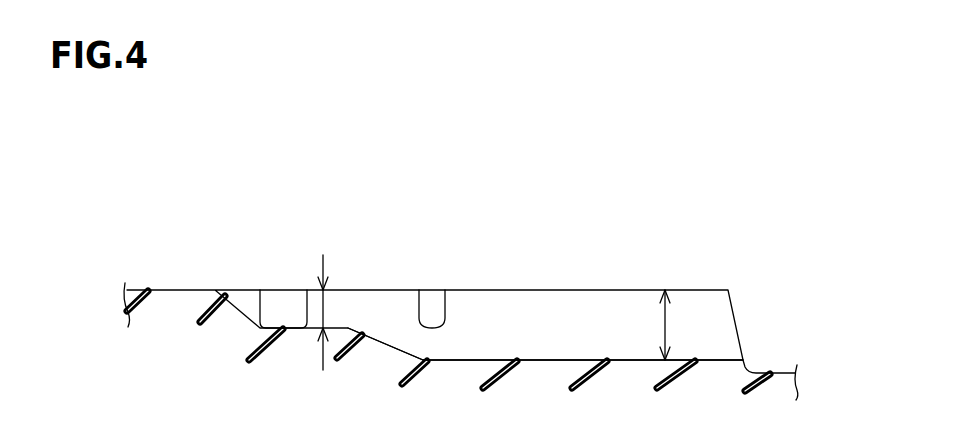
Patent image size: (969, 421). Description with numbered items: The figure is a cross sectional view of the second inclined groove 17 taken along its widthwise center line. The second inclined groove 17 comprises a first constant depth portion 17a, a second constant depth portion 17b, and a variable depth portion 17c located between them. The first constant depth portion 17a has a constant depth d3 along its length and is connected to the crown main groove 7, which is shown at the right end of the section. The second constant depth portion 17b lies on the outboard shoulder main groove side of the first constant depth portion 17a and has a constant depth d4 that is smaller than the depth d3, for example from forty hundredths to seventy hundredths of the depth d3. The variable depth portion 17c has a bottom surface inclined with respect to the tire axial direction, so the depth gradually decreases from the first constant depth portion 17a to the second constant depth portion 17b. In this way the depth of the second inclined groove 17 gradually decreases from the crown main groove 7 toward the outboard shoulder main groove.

The second inclined groove 17 is at (503, 322).
The first constant depth portion 17a is at (627, 357).
The second constant depth portion 17b is at (253, 325).
The variable depth portion 17c is at (395, 345).
The depth of the first constant depth portion d3 is at (665, 323).
The depth of the second constant depth portion d4 is at (323, 310).
The crown main groove 7 is at (768, 350).